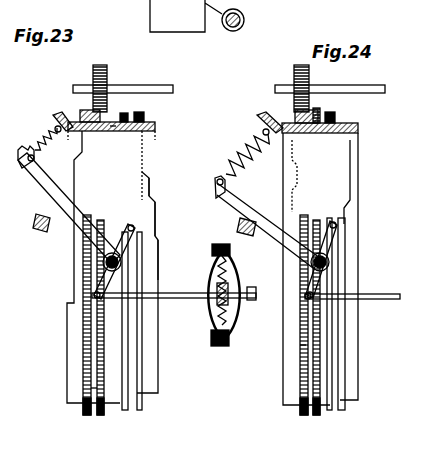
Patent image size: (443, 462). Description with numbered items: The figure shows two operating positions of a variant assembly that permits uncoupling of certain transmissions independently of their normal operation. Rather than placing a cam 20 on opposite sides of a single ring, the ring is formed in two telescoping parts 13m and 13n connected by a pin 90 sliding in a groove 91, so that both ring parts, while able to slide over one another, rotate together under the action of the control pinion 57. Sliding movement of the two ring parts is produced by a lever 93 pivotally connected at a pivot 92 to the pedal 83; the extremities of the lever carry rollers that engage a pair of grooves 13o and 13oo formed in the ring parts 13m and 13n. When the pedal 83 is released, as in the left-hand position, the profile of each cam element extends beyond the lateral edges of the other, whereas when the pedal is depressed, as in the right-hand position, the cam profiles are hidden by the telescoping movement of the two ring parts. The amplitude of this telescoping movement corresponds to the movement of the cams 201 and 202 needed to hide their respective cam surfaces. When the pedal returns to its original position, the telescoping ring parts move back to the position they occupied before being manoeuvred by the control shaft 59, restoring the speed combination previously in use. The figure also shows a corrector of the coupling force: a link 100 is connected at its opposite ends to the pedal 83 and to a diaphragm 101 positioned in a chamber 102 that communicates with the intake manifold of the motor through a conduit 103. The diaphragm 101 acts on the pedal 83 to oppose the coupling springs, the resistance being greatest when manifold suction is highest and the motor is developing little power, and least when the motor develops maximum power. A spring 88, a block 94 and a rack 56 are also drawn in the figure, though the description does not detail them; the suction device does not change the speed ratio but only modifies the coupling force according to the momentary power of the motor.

In FIG. 23, the control pinion 57 is at (106, 76).
In FIG. 24, the control pinion 57 is at (295, 72).
In FIG. 23, the control shaft 59 is at (172, 90).
In FIG. 24, the control shaft 59 is at (370, 90).
In FIG. 23, the groove 91 is at (113, 128).
In FIG. 23, the pin 90 is at (143, 120).
In FIG. 24, the pin 90 is at (350, 122).
In FIG. 23, the telescoping ring part 13m is at (38, 119).
In FIG. 24, the telescoping ring part 13m is at (245, 113).
In FIG. 23, the telescoping ring part 13n is at (113, 172).
In FIG. 24, the telescoping ring part 13n is at (327, 184).
In FIG. 23, the spring 88 is at (39, 138).
In FIG. 24, the spring 88 is at (245, 152).
In FIG. 23, the pedal 83 is at (82, 258).
In FIG. 24, the pedal 83 is at (236, 203).
In FIG. 23, the stop block 94 is at (44, 232).
In FIG. 24, the stop block 94 is at (246, 236).
In FIG. 23, the cam 201 is at (157, 223).
In FIG. 23, the cam 202 is at (155, 241).
In FIG. 23, the cam 20 is at (152, 263).
In FIG. 23, the rack 56 is at (83, 352).
In FIG. 24, the rack 56 is at (300, 384).
In FIG. 23, the groove 13o is at (92, 387).
In FIG. 24, the groove 13o is at (300, 345).
In FIG. 23, the groove 13oo is at (133, 401).
In FIG. 24, the groove 13oo is at (335, 370).
In FIG. 23, the pivot 92 is at (119, 267).
In FIG. 24, the pivot 92 is at (330, 263).
In FIG. 23, the lever 93 is at (130, 285).
In FIG. 24, the lever 93 is at (346, 236).
In FIG. 23, the link 100 is at (128, 299).
In FIG. 24, the link 100 is at (376, 300).
In FIG. 23, the diaphragm 101 is at (229, 347).
In FIG. 23, the chamber 102 is at (209, 335).
In FIG. 23, the conduit 103 is at (245, 292).